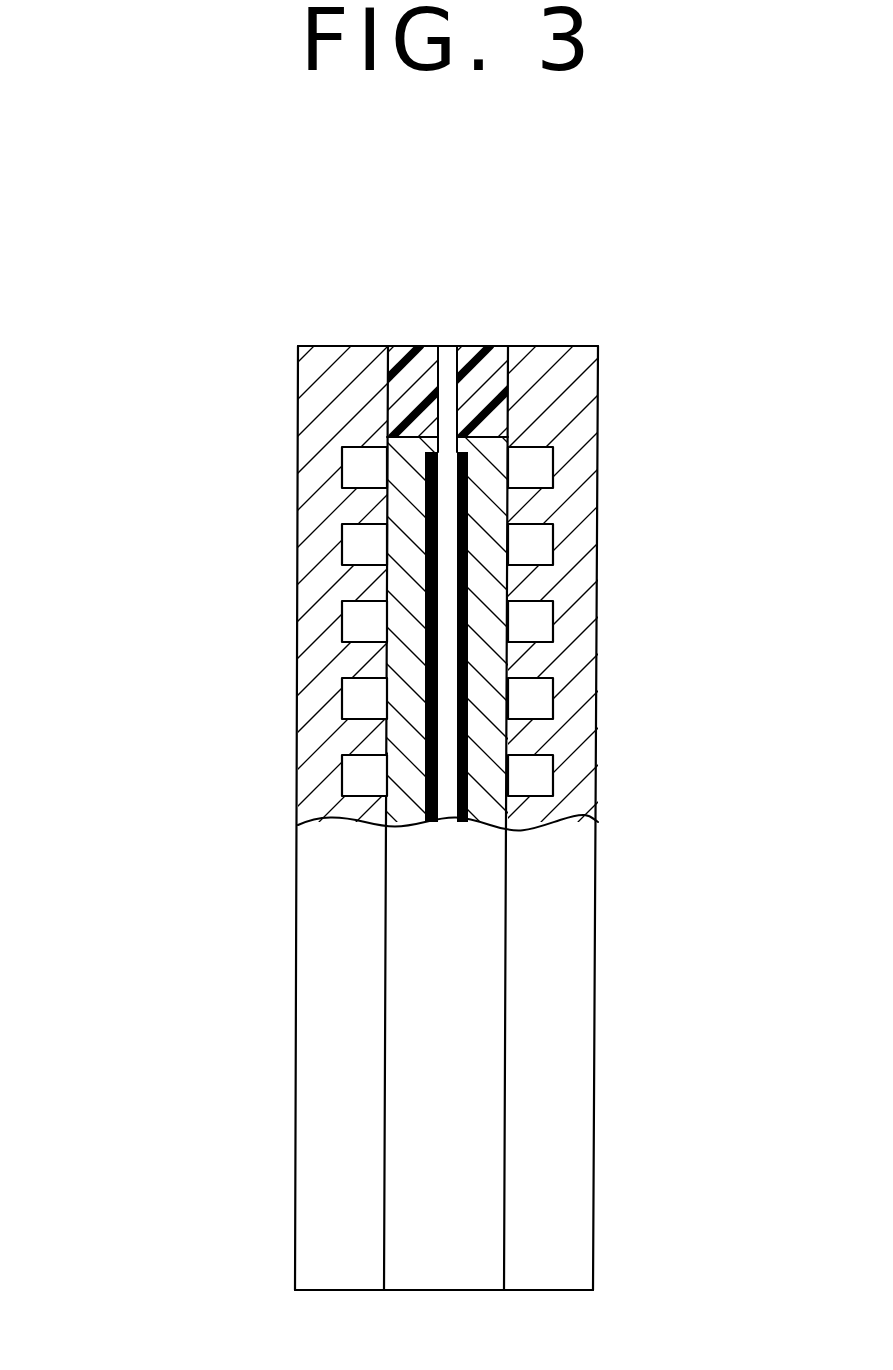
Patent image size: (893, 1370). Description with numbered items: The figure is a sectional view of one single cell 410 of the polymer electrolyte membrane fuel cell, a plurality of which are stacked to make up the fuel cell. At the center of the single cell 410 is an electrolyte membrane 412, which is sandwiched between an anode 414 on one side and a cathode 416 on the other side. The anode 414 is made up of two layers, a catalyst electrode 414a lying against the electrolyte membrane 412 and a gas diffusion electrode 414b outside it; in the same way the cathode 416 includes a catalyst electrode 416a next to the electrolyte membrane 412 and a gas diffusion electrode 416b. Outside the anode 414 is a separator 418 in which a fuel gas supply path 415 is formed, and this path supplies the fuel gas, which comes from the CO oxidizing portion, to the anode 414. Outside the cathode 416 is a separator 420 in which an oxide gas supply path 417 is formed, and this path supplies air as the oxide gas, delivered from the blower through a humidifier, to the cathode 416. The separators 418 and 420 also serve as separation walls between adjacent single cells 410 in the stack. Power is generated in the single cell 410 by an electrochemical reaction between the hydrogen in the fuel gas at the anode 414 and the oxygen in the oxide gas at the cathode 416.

The single cell 410 is at (600, 290).
The electrolyte membrane 412 is at (443, 353).
The anode 414 is at (140, 505).
The catalyst electrode 414a is at (423, 544).
The gas diffusion electrode 414b is at (415, 598).
The fuel gas supply path 415 is at (357, 700).
The cathode 416 is at (757, 508).
The catalyst electrode 416a is at (467, 542).
The gas diffusion electrode 416b is at (488, 595).
The oxide gas supply path 417 is at (530, 702).
The separator 418 is at (310, 382).
The separator 420 is at (587, 395).